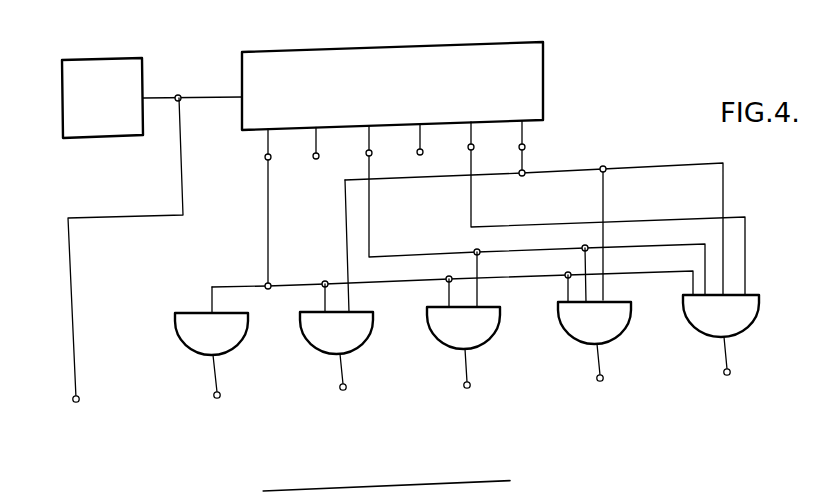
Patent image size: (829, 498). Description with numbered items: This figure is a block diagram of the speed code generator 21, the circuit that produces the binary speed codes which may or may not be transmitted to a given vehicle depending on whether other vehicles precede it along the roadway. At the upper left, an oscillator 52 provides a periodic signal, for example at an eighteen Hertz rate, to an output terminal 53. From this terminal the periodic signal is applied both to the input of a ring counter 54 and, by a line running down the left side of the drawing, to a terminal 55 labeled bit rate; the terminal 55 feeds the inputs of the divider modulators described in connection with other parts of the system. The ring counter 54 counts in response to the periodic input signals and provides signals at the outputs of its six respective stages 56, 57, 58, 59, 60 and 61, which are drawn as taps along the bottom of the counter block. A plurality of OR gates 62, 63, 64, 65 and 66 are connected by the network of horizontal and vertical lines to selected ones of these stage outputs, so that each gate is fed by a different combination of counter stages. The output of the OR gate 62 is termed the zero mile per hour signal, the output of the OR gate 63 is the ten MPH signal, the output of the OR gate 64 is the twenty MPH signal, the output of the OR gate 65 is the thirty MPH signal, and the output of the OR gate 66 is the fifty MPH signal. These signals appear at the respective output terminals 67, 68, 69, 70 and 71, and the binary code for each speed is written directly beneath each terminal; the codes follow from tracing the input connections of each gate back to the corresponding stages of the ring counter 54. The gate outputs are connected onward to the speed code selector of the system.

The speed code generator 21 is at (598, 134).
The oscillator 52 is at (117, 60).
The output terminal 53 is at (178, 95).
The ring counter 54 is at (460, 44).
The terminal 55 is at (78, 396).
The ring counter stage output 56 is at (265, 157).
The ring counter stage output 57 is at (314, 158).
The ring counter stage output 58 is at (366, 153).
The ring counter stage output 59 is at (417, 152).
The ring counter stage output 60 is at (468, 148).
The ring counter stage output 61 is at (525, 148).
The OR gate 62 is at (248, 340).
The OR gate 63 is at (373, 337).
The OR gate 64 is at (500, 333).
The OR gate 65 is at (631, 328).
The OR gate 66 is at (759, 323).
The output terminal 67 is at (219, 392).
The output terminal 68 is at (345, 384).
The output terminal 69 is at (469, 382).
The output terminal 70 is at (602, 375).
The output terminal 71 is at (729, 369).